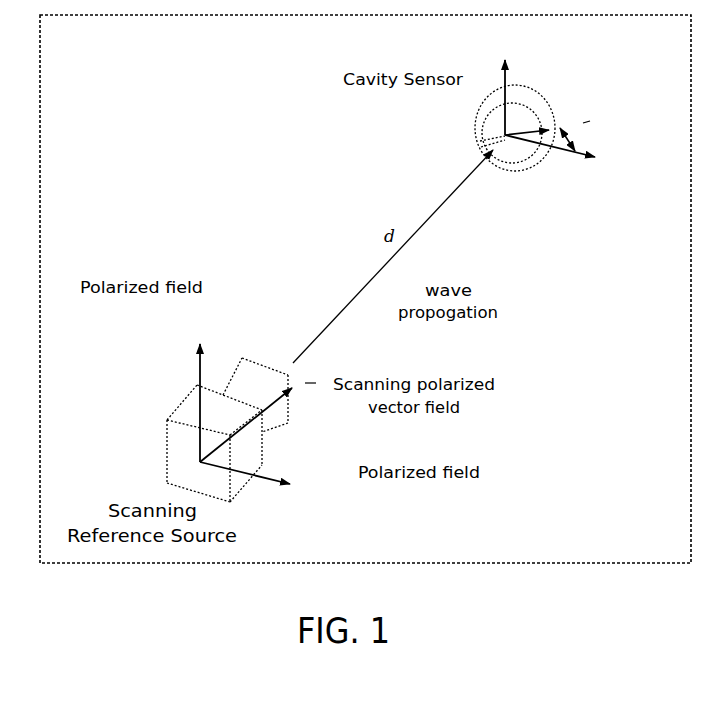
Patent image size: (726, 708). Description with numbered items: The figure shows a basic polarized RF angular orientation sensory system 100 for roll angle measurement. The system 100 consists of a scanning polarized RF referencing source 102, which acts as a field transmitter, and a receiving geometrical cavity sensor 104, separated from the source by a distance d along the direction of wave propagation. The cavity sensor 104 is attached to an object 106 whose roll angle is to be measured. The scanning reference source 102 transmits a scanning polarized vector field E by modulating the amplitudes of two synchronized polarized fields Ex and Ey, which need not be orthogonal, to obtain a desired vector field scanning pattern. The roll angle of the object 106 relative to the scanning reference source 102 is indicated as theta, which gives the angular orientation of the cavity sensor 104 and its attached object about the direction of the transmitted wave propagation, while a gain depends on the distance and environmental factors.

The sensory system 100 is at (232, 182).
The scanning polarized RF referencing source 102 is at (170, 413).
The cavity sensor 104 is at (503, 145).
The object 106 is at (547, 97).